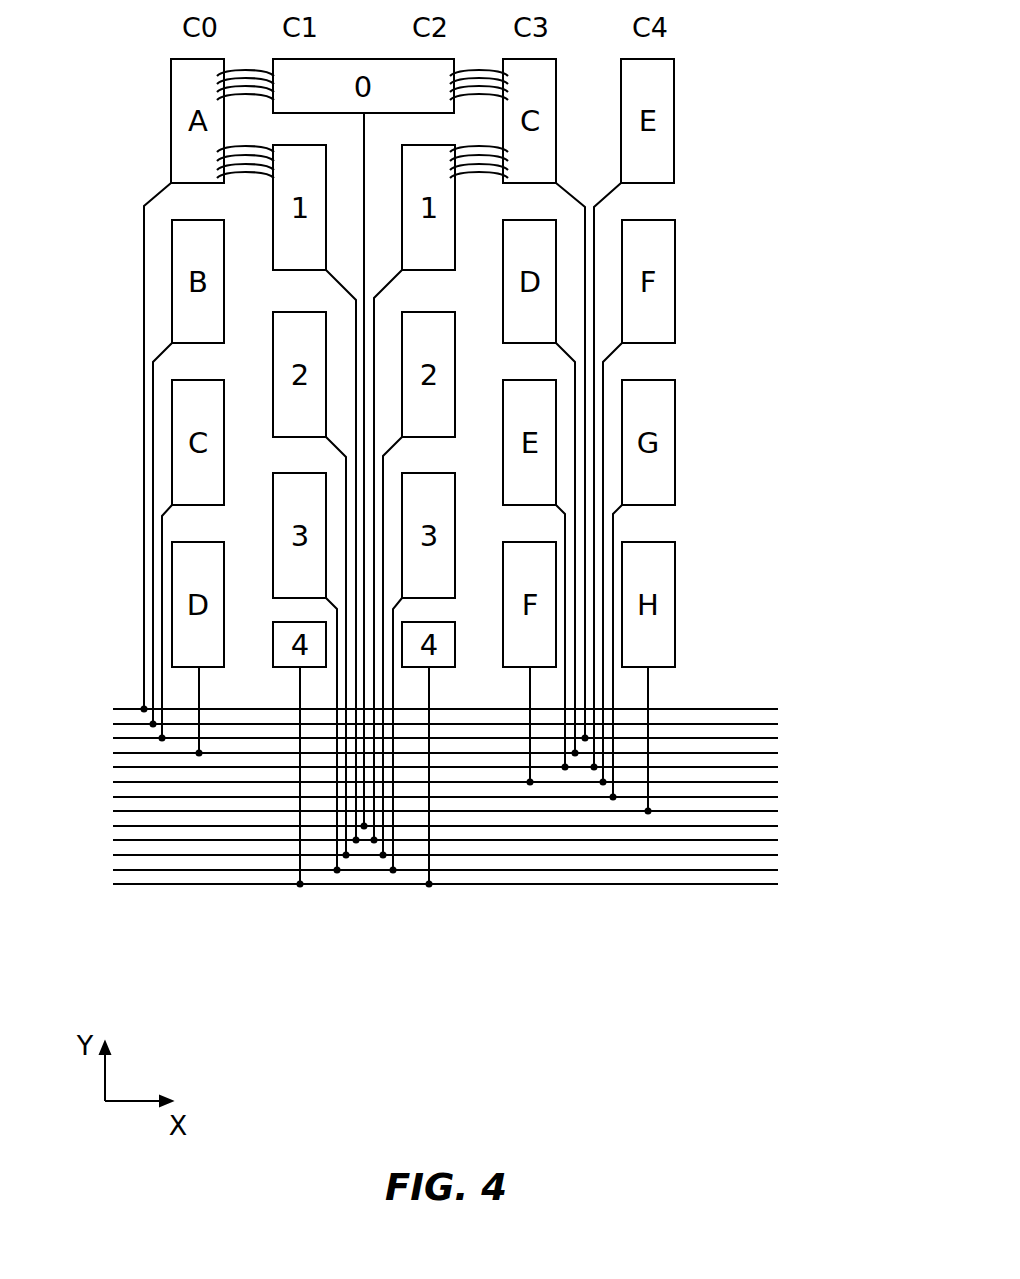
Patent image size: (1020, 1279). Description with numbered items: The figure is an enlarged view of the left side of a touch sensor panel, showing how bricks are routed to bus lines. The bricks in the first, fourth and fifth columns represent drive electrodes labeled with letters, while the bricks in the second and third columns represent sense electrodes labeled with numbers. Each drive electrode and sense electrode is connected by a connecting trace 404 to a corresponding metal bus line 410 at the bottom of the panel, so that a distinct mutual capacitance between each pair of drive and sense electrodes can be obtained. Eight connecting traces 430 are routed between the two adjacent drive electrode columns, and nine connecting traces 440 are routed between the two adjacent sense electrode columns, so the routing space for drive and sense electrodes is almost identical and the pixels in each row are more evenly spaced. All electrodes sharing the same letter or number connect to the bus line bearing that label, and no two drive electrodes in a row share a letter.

The metal bus lines 410 is at (787, 897).
The connecting traces 440 is at (437, 892).
The connecting traces 430 is at (523, 892).
The connecting traces 404 is at (145, 952).